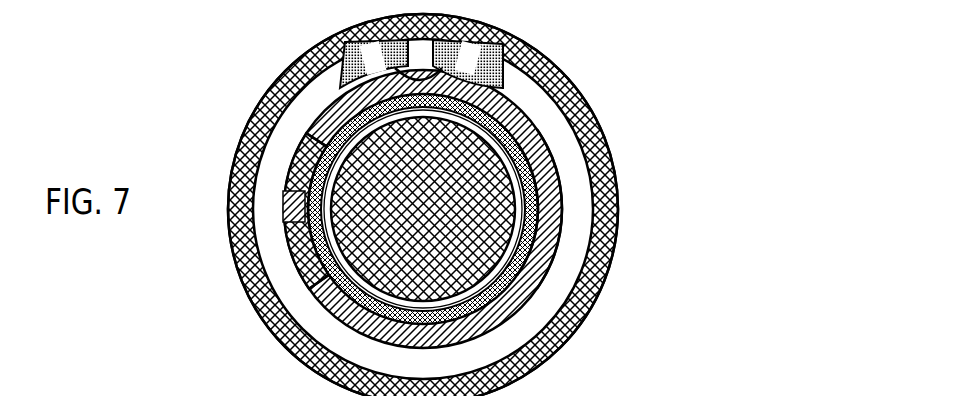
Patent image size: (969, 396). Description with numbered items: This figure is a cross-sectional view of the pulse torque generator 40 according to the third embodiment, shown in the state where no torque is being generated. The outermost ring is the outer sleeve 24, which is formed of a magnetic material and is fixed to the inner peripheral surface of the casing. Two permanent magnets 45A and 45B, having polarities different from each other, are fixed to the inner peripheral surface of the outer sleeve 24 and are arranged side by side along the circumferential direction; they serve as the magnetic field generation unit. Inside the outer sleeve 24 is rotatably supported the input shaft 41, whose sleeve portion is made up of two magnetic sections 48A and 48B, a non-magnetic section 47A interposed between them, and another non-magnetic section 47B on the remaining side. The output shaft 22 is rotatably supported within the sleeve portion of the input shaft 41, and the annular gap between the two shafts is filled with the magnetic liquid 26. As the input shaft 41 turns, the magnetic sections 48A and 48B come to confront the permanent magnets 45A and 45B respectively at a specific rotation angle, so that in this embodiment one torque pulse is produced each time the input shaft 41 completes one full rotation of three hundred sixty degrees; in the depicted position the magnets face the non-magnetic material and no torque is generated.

The pulse torque generator 40 is at (713, 110).
The output shaft 22 is at (523, 145).
The outer sleeve 24 is at (552, 68).
The magnetic liquid 26 is at (543, 165).
The input shaft 41 is at (562, 213).
The permanent magnet 45A is at (332, 58).
The permanent magnet 45B is at (508, 42).
The non-magnetic section 47A is at (283, 203).
The non-magnetic section 47B is at (543, 262).
The magnetic section 48A is at (327, 128).
The magnetic section 48B is at (320, 282).